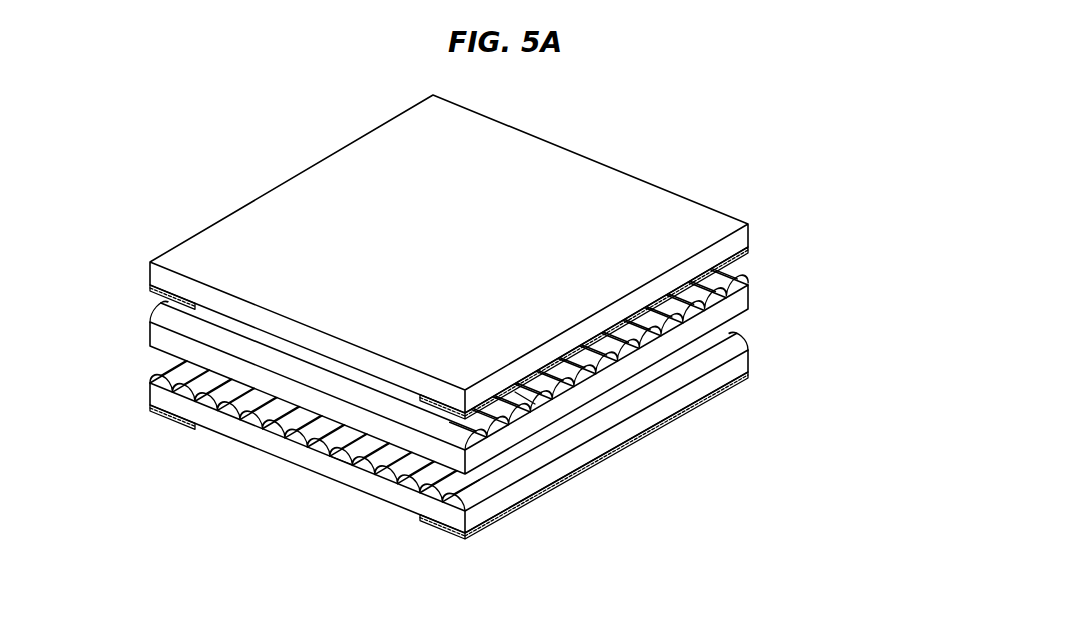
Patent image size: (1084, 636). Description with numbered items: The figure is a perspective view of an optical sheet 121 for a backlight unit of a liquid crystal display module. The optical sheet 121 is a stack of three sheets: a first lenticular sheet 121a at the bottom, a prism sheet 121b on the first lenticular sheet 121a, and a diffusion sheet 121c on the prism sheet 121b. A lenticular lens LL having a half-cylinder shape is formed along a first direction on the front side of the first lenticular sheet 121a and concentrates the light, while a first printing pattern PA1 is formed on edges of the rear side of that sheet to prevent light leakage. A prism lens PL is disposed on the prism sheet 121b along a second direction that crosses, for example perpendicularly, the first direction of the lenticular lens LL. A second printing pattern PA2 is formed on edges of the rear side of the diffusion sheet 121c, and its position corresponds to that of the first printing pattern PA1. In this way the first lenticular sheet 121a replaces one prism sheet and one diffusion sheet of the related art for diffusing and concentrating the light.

The optical sheet 121 is at (550, 314).
The first lenticular sheet 121a is at (740, 362).
The prism sheet 121b is at (740, 300).
The diffusion sheet 121c is at (740, 240).
The lenticular lens LL is at (337, 463).
The prism lens PL is at (525, 396).
The first printing pattern PA1 is at (168, 420).
The second printing pattern PA2 is at (150, 290).